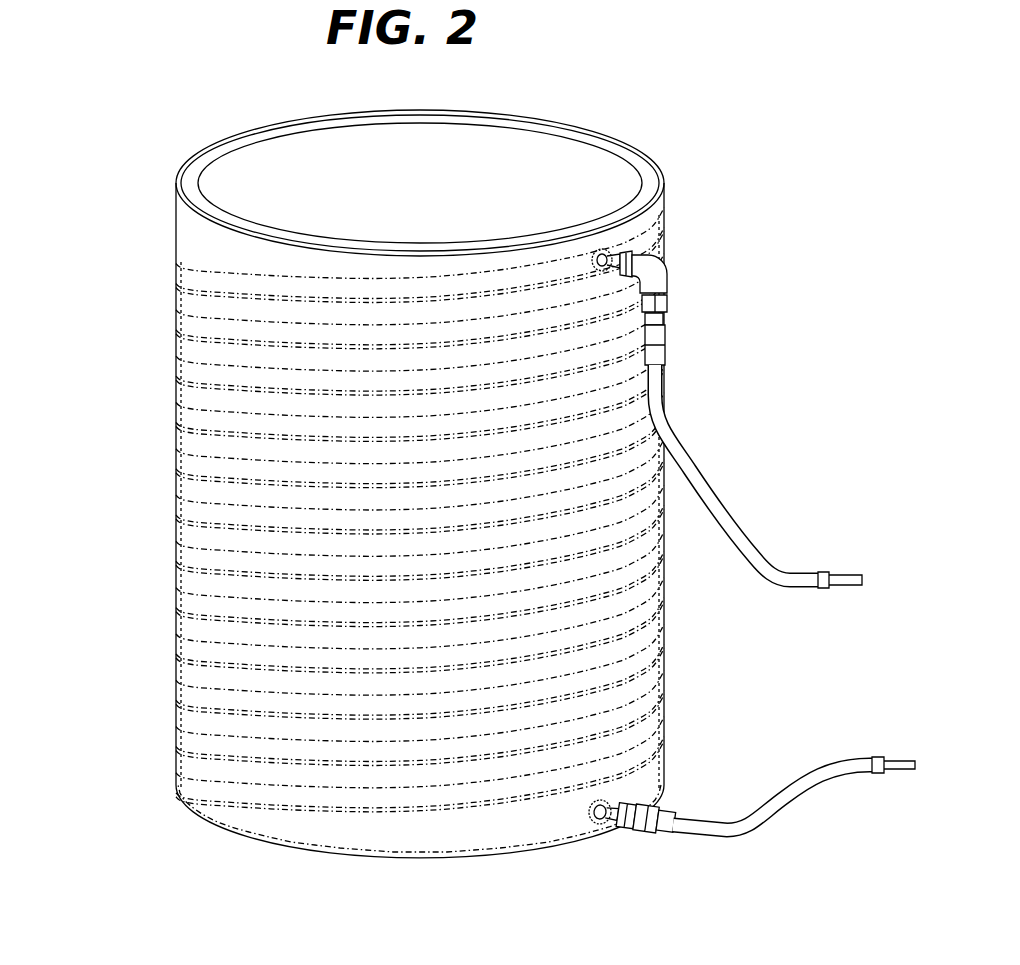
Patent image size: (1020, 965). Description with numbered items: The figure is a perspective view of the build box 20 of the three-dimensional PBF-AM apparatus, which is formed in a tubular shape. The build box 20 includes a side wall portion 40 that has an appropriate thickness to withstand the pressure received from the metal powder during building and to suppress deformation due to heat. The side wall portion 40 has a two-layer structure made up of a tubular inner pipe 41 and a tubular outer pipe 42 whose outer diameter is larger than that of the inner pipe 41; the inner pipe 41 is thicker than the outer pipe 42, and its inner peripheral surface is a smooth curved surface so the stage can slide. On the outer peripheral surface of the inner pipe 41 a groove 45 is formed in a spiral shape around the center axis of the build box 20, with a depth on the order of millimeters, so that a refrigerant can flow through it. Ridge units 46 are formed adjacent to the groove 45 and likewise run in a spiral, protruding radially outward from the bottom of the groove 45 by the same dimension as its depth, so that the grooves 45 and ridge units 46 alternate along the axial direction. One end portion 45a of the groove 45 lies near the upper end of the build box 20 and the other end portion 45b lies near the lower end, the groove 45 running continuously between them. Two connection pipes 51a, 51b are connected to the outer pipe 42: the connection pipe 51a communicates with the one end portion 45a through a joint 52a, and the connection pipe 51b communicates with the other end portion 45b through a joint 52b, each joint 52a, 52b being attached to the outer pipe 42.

The build box 20 is at (60, 165).
The side wall portion 40 is at (200, 85).
The inner pipe 41 is at (203, 165).
The outer pipe 42 is at (188, 165).
The groove 45 is at (220, 275).
The ridge units 46 is at (232, 316).
The one end portion 45a is at (591, 257).
The other end portion 45b is at (610, 832).
The connection pipe 51a is at (750, 540).
The connection pipe 51b is at (772, 818).
The joint 52a is at (666, 255).
The joint 52b is at (665, 808).